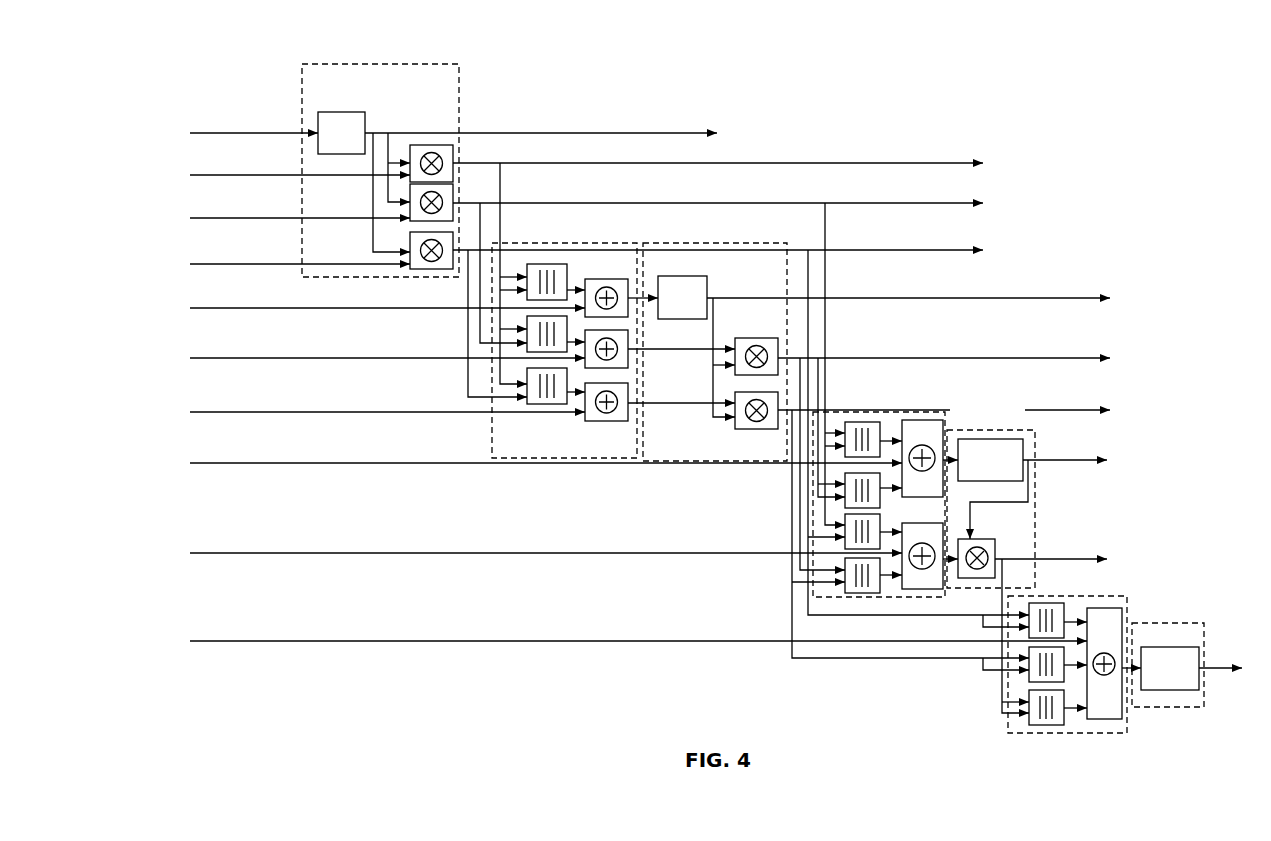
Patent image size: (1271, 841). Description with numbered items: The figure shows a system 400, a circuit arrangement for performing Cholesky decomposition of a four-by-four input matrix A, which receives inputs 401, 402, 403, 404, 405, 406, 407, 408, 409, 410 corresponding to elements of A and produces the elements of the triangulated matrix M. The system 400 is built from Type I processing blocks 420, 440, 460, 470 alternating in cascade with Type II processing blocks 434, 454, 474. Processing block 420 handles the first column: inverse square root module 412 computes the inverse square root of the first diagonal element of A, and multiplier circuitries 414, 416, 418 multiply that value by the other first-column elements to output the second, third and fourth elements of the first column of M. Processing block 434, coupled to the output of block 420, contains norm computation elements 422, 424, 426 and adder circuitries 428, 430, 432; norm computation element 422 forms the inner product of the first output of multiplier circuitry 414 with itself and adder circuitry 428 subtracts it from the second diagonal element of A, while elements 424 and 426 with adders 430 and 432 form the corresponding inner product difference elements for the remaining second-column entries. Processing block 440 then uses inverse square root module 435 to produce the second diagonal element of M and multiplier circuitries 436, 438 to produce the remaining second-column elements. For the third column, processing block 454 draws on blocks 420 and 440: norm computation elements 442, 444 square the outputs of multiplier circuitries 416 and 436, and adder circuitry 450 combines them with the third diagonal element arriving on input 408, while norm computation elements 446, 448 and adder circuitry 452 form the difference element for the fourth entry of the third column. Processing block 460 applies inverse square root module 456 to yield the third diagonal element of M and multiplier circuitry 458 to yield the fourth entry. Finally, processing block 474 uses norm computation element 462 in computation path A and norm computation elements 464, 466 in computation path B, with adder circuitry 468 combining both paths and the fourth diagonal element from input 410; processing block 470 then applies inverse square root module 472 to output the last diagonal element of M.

The system 400 is at (262, 31).
The input 401 is at (240, 131).
The input 402 is at (240, 173).
The input 403 is at (240, 216).
The input 404 is at (240, 262).
The input 405 is at (240, 306).
The input 406 is at (240, 356).
The input 407 is at (240, 410).
The input 408 is at (240, 461).
The input 409 is at (240, 551).
The input 410 is at (240, 639).
The inverse square root module 412 is at (366, 117).
The multiplier circuitry 414 is at (457, 158).
The multiplier circuitry 416 is at (409, 203).
The multiplier circuitry 418 is at (409, 247).
The processing block 420 is at (360, 64).
The norm computation element 422 is at (545, 264).
The norm computation element 424 is at (527, 330).
The norm computation element 426 is at (545, 405).
The adder circuitry 428 is at (600, 279).
The adder circuitry 430 is at (630, 357).
The adder circuitry 432 is at (625, 422).
The processing block 434 is at (492, 430).
The inverse square root module 435 is at (690, 276).
The multiplier circuitry 436 is at (757, 338).
The multiplier circuitry 438 is at (760, 429).
The processing block 440 is at (700, 461).
The norm computation element 442 is at (862, 422).
The norm computation element 444 is at (845, 502).
The norm computation element 446 is at (845, 546).
The norm computation element 448 is at (862, 593).
The adder circuitry 450 is at (920, 420).
The adder circuitry 452 is at (920, 589).
The processing block 454 is at (813, 597).
The inverse square root module 456 is at (1025, 478).
The multiplier circuitry 458 is at (970, 541).
The processing block 460 is at (1035, 525).
The norm computation element 462 is at (1046, 603).
The norm computation element 464 is at (1029, 678).
The norm computation element 466 is at (1029, 722).
The adder circuitry 468 is at (1104, 608).
The processing block 470 is at (1205, 688).
The inverse square root module 472 is at (1178, 647).
The processing block 474 is at (1062, 733).